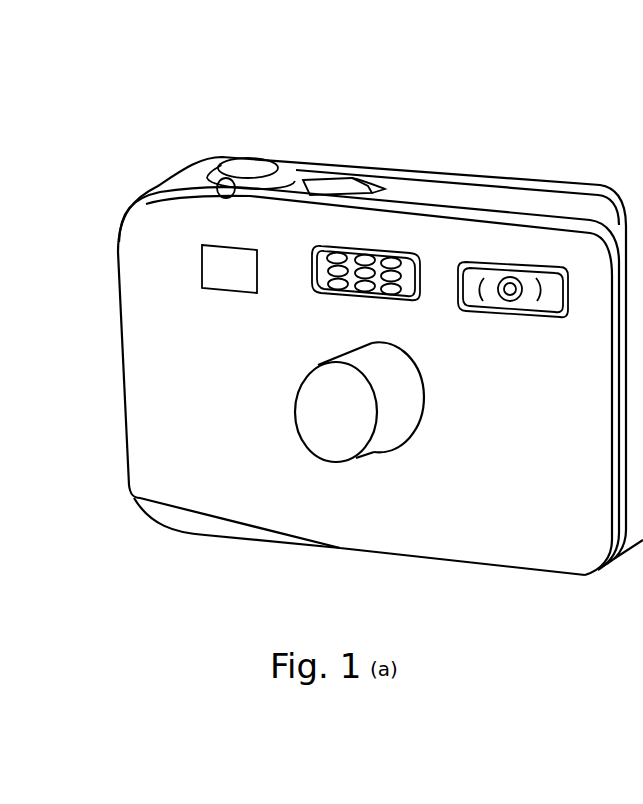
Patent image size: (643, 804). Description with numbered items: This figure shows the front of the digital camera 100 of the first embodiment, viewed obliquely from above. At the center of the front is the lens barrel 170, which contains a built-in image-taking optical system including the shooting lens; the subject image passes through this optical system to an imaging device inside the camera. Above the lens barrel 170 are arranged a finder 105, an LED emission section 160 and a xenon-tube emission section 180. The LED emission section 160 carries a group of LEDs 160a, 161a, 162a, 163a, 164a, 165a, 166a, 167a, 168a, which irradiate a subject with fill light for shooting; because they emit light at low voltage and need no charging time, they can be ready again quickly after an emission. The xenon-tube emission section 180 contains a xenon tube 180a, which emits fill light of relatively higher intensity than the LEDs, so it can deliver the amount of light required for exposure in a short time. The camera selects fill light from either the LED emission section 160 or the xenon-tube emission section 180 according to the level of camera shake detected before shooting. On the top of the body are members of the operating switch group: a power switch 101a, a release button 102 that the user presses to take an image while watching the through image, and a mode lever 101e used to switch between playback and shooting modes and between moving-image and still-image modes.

The digital camera 100 is at (422, 112).
The power switch 101a is at (333, 176).
The mode lever 101e is at (211, 177).
The release button 102 is at (248, 166).
The finder 105 is at (239, 283).
The LED emission section 160 is at (369, 291).
The LED 160a is at (340, 257).
The LED 161a is at (367, 258).
The LED 162a is at (395, 262).
The LED 163a is at (340, 271).
The LED 164a is at (358, 274).
The LED 165a is at (403, 277).
The LED 166a is at (343, 287).
The LED 167a is at (370, 290).
The LED 168a is at (397, 290).
The lens barrel 170 is at (400, 397).
The xenon-tube emission section 180 is at (523, 273).
The xenon tube 180a is at (523, 277).